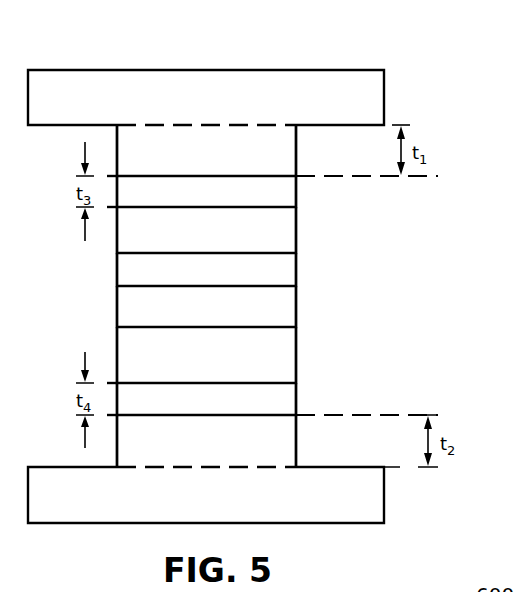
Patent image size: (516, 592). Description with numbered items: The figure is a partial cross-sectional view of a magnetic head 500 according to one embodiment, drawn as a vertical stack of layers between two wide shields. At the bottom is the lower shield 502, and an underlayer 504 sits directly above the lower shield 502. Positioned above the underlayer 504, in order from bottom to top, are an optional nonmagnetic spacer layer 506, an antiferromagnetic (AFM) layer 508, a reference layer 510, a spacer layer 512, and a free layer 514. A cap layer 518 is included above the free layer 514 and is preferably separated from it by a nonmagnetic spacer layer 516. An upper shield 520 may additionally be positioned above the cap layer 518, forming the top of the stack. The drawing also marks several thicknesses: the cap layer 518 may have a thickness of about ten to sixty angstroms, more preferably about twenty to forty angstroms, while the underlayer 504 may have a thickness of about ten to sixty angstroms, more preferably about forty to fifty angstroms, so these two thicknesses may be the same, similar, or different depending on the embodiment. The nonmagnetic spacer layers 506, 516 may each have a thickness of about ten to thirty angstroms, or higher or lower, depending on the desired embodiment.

The magnetic head 500 is at (404, 42).
The lower shield 502 is at (182, 508).
The underlayer 504 is at (182, 454).
The nonmagnetic spacer layer 506 is at (182, 412).
The antiferromagnetic (AFM) layer 508 is at (182, 370).
The reference layer 510 is at (182, 318).
The spacer layer 512 is at (182, 282).
The free layer 514 is at (182, 244).
The nonmagnetic spacer layer 516 is at (182, 204).
The cap layer 518 is at (182, 164).
The upper shield 520 is at (182, 110).